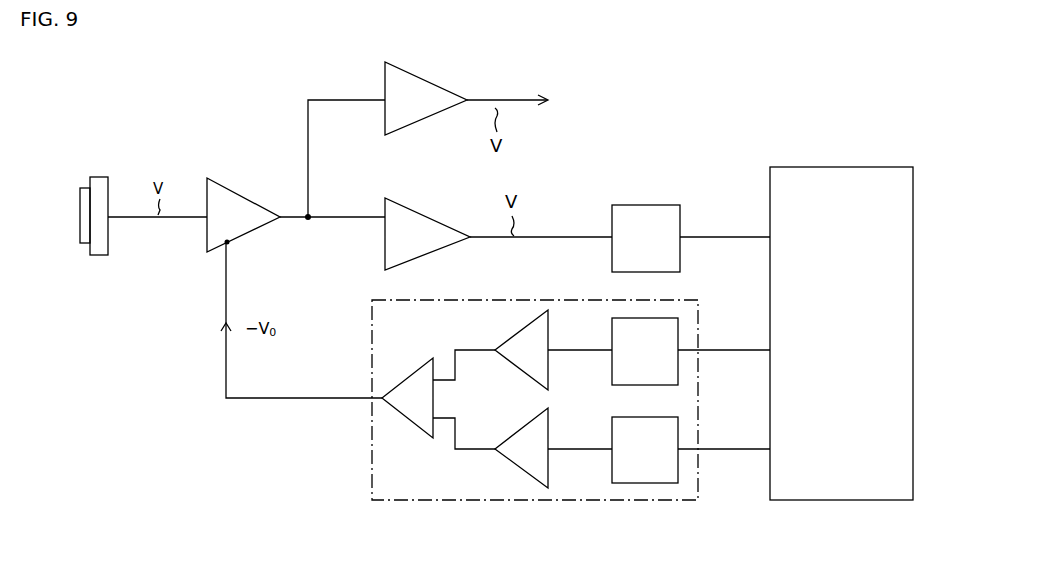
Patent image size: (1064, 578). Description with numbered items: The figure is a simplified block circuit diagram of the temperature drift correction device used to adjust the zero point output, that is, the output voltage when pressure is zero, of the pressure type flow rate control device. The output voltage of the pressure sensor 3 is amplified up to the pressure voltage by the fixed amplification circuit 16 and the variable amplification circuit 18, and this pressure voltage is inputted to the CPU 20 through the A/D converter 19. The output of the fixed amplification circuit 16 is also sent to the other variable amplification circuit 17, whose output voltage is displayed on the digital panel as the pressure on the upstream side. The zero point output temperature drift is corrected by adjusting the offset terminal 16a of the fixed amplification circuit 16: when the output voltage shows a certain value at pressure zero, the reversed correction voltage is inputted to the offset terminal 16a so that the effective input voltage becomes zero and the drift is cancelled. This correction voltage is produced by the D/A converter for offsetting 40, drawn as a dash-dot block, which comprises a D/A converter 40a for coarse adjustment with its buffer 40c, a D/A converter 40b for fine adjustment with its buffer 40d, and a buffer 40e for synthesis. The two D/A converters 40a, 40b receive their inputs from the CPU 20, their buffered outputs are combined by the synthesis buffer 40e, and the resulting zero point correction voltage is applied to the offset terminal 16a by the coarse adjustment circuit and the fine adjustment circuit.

The pressure sensor 3 is at (100, 248).
The fixed amplification circuit 16 is at (207, 233).
The offset terminal 16a is at (229, 245).
The variable amplification circuit 17 is at (433, 82).
The variable amplification circuit 18 is at (420, 212).
The A/D converter 19 is at (645, 205).
The CPU 20 is at (842, 167).
The D/A converter for offsetting 40 is at (655, 500).
The D/A converter for coarse adjustment 40a is at (611, 376).
The D/A converter for fine adjustment 40b is at (608, 483).
The buffer 40c is at (515, 366).
The buffer 40d is at (508, 463).
The buffer for synthesis 40e is at (404, 417).